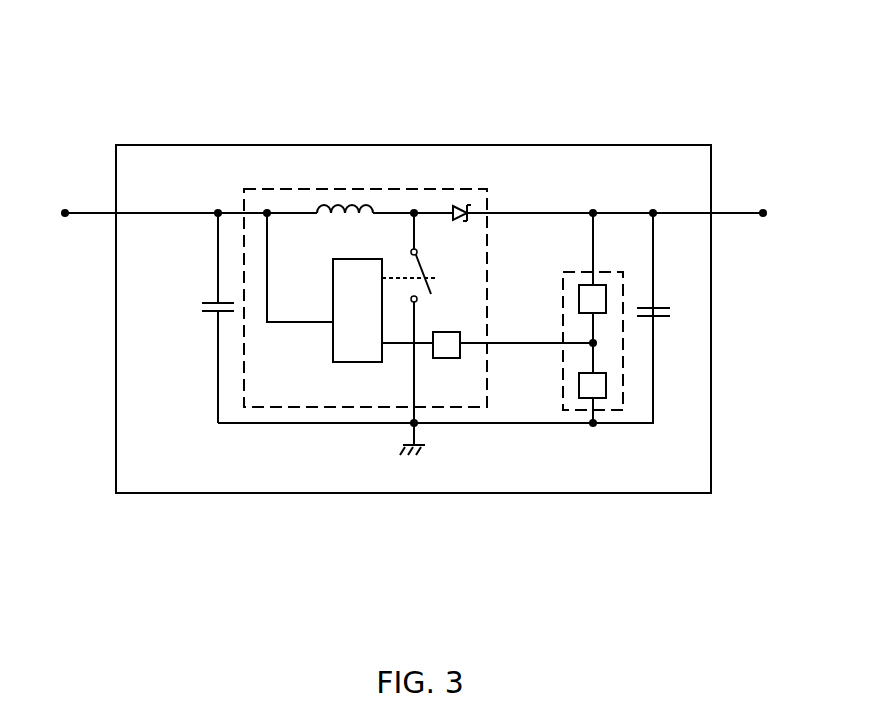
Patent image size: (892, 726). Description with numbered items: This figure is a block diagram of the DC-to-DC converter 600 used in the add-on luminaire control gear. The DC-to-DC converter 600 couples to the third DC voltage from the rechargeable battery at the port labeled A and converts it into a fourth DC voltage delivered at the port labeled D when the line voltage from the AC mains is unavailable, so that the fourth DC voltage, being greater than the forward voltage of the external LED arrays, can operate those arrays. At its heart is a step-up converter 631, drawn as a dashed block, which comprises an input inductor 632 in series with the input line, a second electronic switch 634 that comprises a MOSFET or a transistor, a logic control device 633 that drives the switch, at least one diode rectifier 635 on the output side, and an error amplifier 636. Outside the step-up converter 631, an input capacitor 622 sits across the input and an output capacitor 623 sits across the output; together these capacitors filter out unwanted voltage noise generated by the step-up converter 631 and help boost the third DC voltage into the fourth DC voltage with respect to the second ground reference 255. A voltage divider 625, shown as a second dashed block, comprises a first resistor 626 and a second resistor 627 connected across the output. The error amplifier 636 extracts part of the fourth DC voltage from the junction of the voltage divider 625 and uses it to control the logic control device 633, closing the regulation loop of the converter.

The DC-to-DC converter 600 is at (410, 140).
The input capacitor 622 is at (208, 311).
The output capacitor 623 is at (665, 307).
The voltage divider 625 is at (627, 372).
The first resistor 626 is at (594, 286).
The second resistor 627 is at (603, 399).
The step-up converter 631 is at (325, 408).
The input inductor 632 is at (342, 187).
The logic control device 633 is at (333, 259).
The second electronic switch 634 is at (433, 296).
The diode rectifier 635 is at (462, 204).
The error amplifier 636 is at (450, 358).
The second ground reference 255 is at (408, 456).